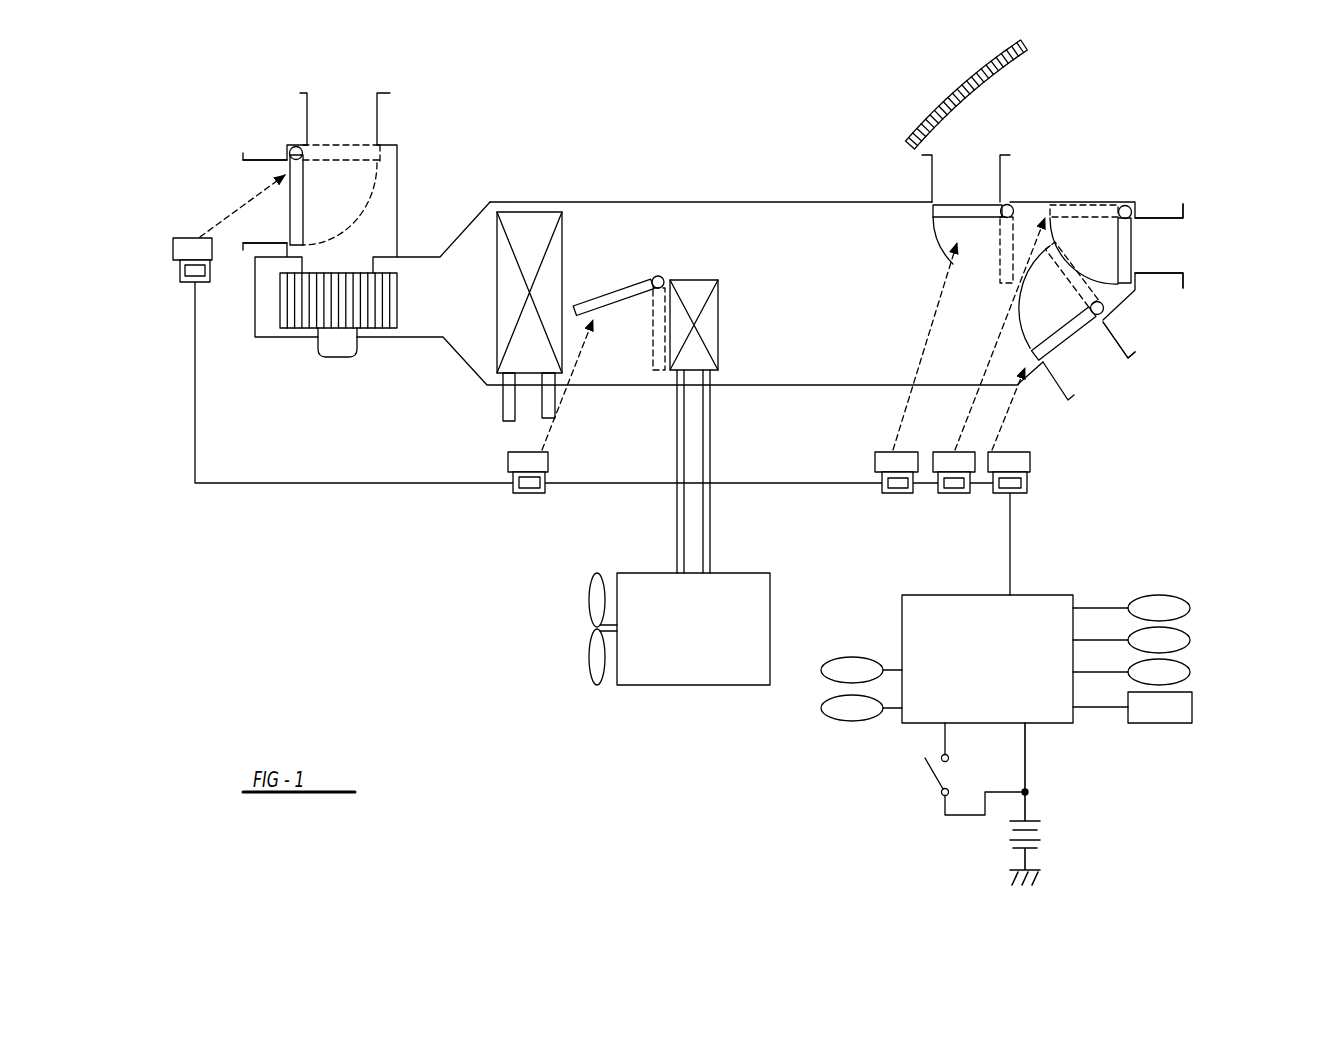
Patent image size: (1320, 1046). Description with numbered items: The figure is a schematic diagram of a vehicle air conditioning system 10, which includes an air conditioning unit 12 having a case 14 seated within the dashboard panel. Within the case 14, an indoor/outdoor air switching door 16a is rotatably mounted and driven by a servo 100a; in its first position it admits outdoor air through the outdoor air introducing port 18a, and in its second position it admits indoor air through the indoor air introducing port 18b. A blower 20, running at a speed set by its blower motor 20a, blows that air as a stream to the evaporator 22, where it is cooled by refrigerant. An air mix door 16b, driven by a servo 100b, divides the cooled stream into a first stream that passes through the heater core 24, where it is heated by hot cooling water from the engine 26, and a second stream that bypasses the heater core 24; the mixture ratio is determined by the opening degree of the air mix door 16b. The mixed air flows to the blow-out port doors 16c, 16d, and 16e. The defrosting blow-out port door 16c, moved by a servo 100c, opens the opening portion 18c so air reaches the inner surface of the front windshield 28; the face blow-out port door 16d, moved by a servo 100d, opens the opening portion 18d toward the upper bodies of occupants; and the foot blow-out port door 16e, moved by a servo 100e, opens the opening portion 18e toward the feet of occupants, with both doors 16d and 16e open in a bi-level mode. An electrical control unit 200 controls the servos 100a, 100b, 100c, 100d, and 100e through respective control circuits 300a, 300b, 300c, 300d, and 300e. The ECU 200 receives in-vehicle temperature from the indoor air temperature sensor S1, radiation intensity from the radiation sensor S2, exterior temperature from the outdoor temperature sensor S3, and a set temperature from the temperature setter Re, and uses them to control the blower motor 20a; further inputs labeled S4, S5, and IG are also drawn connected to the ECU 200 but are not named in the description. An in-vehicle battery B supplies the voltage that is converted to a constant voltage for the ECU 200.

The vehicle air conditioning system 10 is at (362, 607).
The air conditioning unit 12 is at (656, 144).
The case 14 is at (830, 202).
The indoor/outdoor air switching door 16a is at (304, 203).
The air mix door 16b is at (613, 305).
The defrosting blow-out port door 16c is at (973, 202).
The face blow-out port door 16d is at (1133, 237).
The foot blow-out port door 16e is at (1058, 347).
The outdoor air introducing port 18a is at (328, 112).
The indoor air introducing port 18b is at (270, 207).
The opening portion 18c is at (955, 162).
The opening portion 18d is at (1167, 253).
The opening portion 18e is at (1098, 358).
The blower 20 is at (397, 302).
The blower motor 20a is at (343, 357).
The evaporator 22 is at (533, 212).
The heater core 24 is at (718, 325).
The engine 26 is at (772, 607).
The front windshield 28 is at (947, 100).
The servo 100a is at (163, 247).
The servo 100b is at (520, 452).
The servo 100c is at (877, 452).
The servo 100d is at (942, 452).
The servo 100e is at (1015, 452).
The control circuit 300a is at (178, 282).
The control circuit 300b is at (527, 495).
The control circuit 300c is at (897, 493).
The control circuit 300d is at (960, 495).
The control circuit 300e is at (1020, 495).
The electrical control unit 200 is at (1053, 725).
The indoor air temperature sensor S1 is at (1188, 608).
The radiation sensor S2 is at (1190, 640).
The outdoor temperature sensor S3 is at (1190, 670).
The sensor S4 is at (855, 723).
The sensor S5 is at (850, 655).
The temperature setter Re is at (1193, 706).
The ignition switch IG is at (932, 773).
The in-vehicle battery B is at (1042, 832).